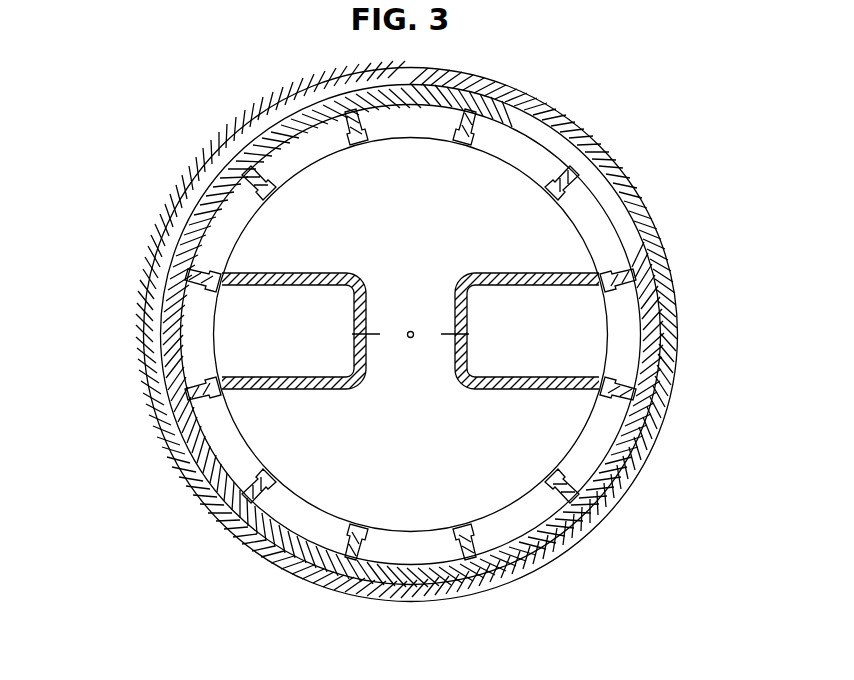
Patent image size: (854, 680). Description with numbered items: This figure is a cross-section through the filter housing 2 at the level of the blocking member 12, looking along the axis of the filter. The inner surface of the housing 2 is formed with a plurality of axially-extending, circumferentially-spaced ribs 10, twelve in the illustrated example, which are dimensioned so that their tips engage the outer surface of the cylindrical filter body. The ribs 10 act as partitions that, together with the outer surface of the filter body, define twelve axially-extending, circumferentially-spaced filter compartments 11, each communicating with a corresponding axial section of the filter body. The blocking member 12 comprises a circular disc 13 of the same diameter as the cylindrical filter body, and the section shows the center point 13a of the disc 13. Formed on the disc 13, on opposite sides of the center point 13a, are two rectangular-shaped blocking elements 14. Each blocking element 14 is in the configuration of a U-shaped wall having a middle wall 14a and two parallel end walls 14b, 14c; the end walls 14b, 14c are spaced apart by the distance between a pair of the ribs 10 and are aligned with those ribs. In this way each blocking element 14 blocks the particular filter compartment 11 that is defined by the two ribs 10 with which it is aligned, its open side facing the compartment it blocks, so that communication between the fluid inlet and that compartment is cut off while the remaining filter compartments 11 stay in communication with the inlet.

The housing 2 is at (140, 336).
The ribs 10 is at (273, 160).
The filter compartments 11 is at (225, 225).
The blocking member 12 is at (578, 227).
The circular disc 13 is at (523, 188).
The center point 13a is at (410, 328).
The blocking elements 14 is at (406, 332).
The middle wall 14a is at (363, 347).
The end wall 14b is at (281, 275).
The end wall 14c is at (290, 383).